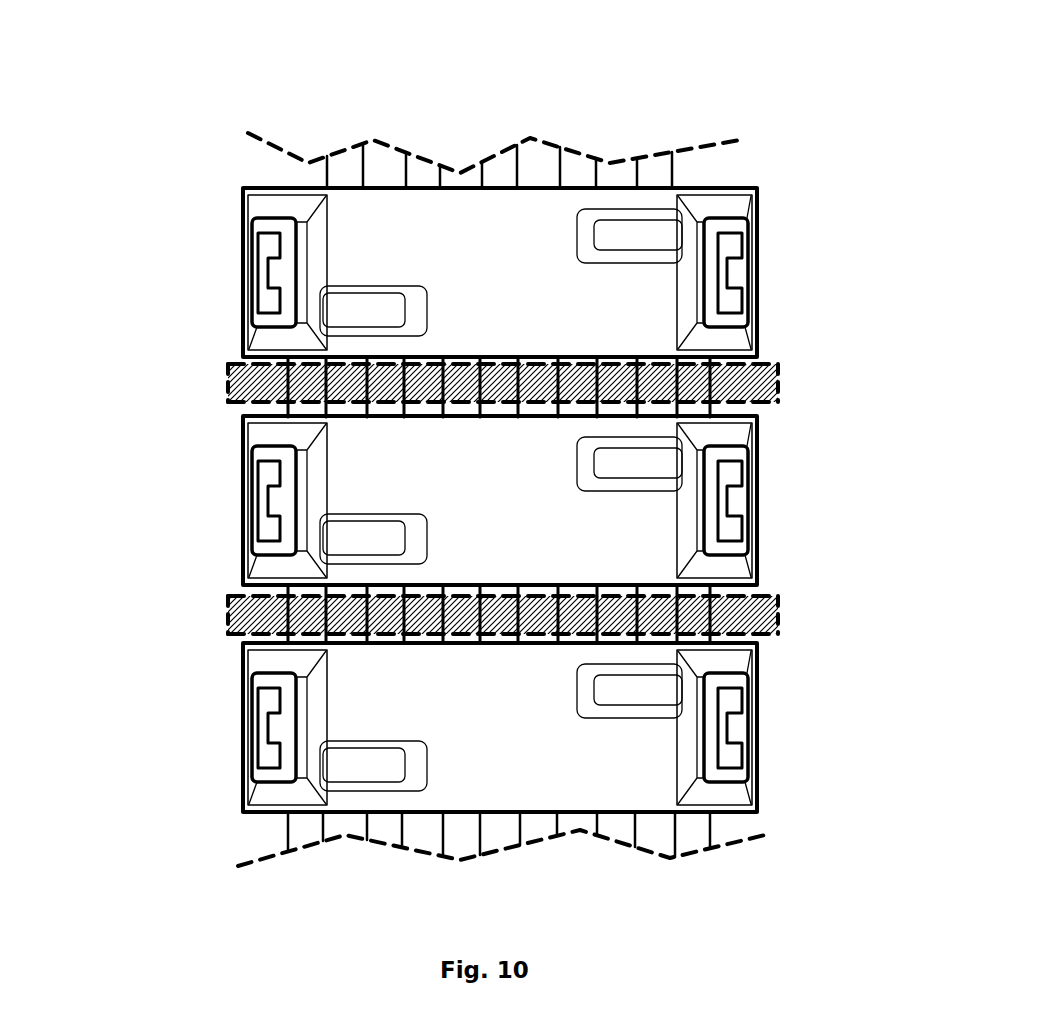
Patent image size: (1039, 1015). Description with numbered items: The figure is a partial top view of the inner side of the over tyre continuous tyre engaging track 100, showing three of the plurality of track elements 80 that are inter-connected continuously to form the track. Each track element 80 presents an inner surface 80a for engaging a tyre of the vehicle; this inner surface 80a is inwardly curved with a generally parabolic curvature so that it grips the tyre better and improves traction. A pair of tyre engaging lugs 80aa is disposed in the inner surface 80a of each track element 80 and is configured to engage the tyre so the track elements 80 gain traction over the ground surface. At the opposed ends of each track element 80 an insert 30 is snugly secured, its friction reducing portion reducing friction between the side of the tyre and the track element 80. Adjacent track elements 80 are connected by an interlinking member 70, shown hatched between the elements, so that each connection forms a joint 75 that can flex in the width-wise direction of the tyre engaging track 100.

The tyre engaging track 100 is at (188, 142).
The track element 80 is at (758, 300).
The inner surface 80a is at (505, 272).
The tyre engaging lugs 80aa is at (378, 300).
The insert 30 is at (268, 272).
The interlinking member 70 is at (773, 380).
The joint 75 is at (208, 411).